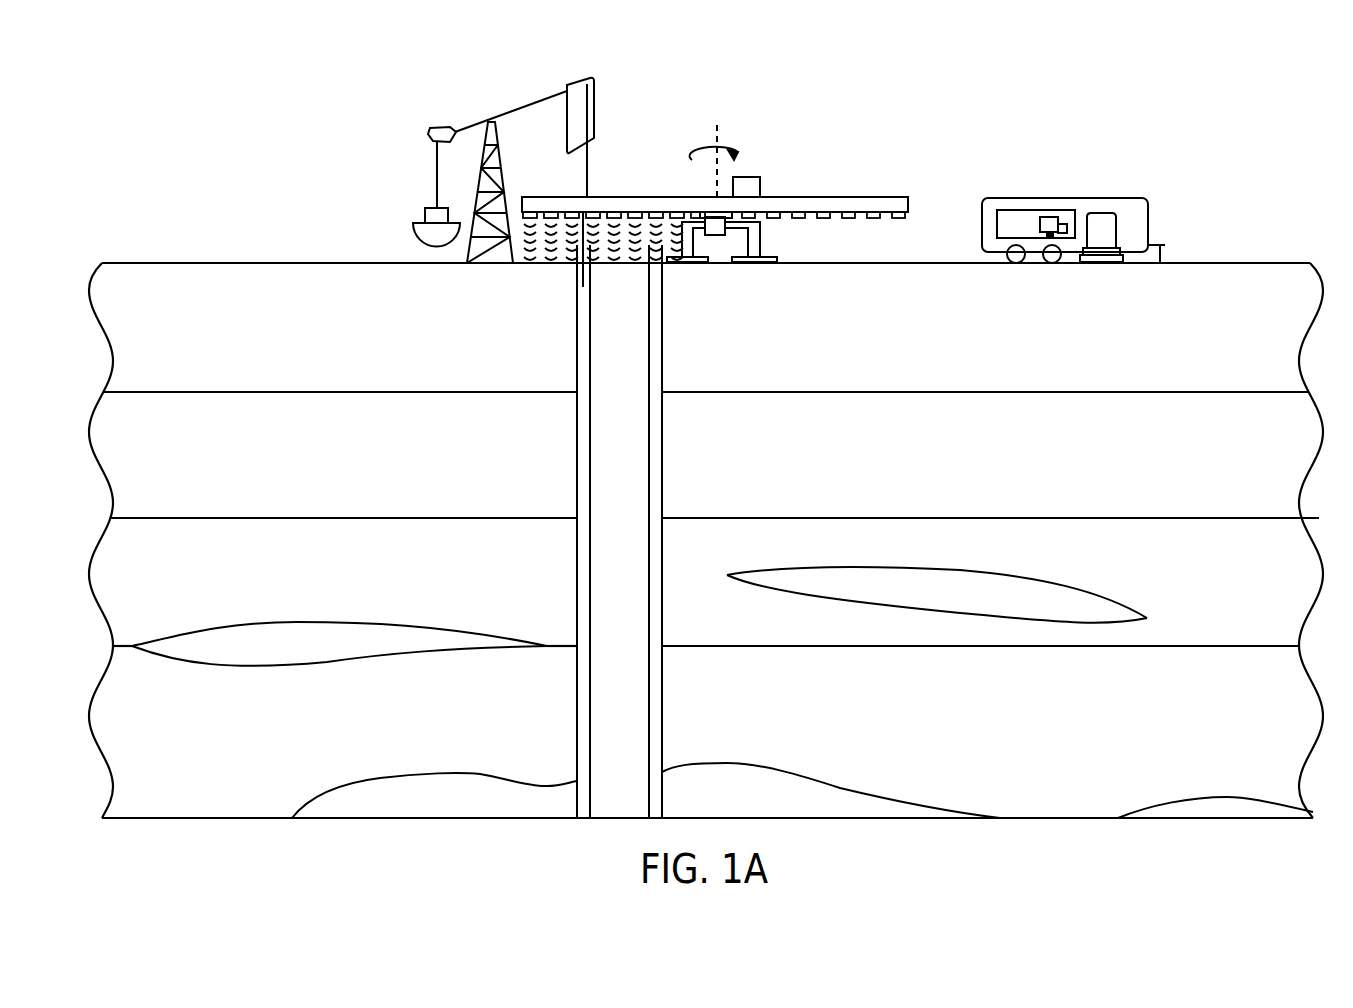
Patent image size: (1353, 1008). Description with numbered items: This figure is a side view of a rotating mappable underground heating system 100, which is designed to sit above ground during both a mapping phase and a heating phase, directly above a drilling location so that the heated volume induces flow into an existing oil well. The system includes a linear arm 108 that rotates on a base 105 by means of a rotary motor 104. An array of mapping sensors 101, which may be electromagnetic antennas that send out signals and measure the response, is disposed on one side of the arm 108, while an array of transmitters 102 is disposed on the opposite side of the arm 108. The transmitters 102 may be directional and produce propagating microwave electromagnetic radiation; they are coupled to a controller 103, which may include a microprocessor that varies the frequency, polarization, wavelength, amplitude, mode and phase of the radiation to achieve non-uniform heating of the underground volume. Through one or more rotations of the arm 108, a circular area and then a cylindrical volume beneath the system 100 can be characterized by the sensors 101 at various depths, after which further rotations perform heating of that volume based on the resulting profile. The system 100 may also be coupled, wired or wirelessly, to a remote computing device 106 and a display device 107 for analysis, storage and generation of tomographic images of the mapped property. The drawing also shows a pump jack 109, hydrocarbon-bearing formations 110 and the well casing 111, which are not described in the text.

The rotating mappable underground heating system 100 is at (836, 109).
The mapping sensors 101 is at (573, 207).
The transmitters 102 is at (773, 210).
The controller 103 is at (750, 178).
The rotary motor 104 is at (716, 236).
The base 105 is at (755, 237).
The remote computing device 106 is at (1063, 228).
The display device 107 is at (1048, 218).
The arm 108 is at (543, 203).
The pump jack 109 is at (482, 122).
The hydrocarbon reservoirs 110 is at (333, 633).
The wellbore casing 111 is at (577, 366).